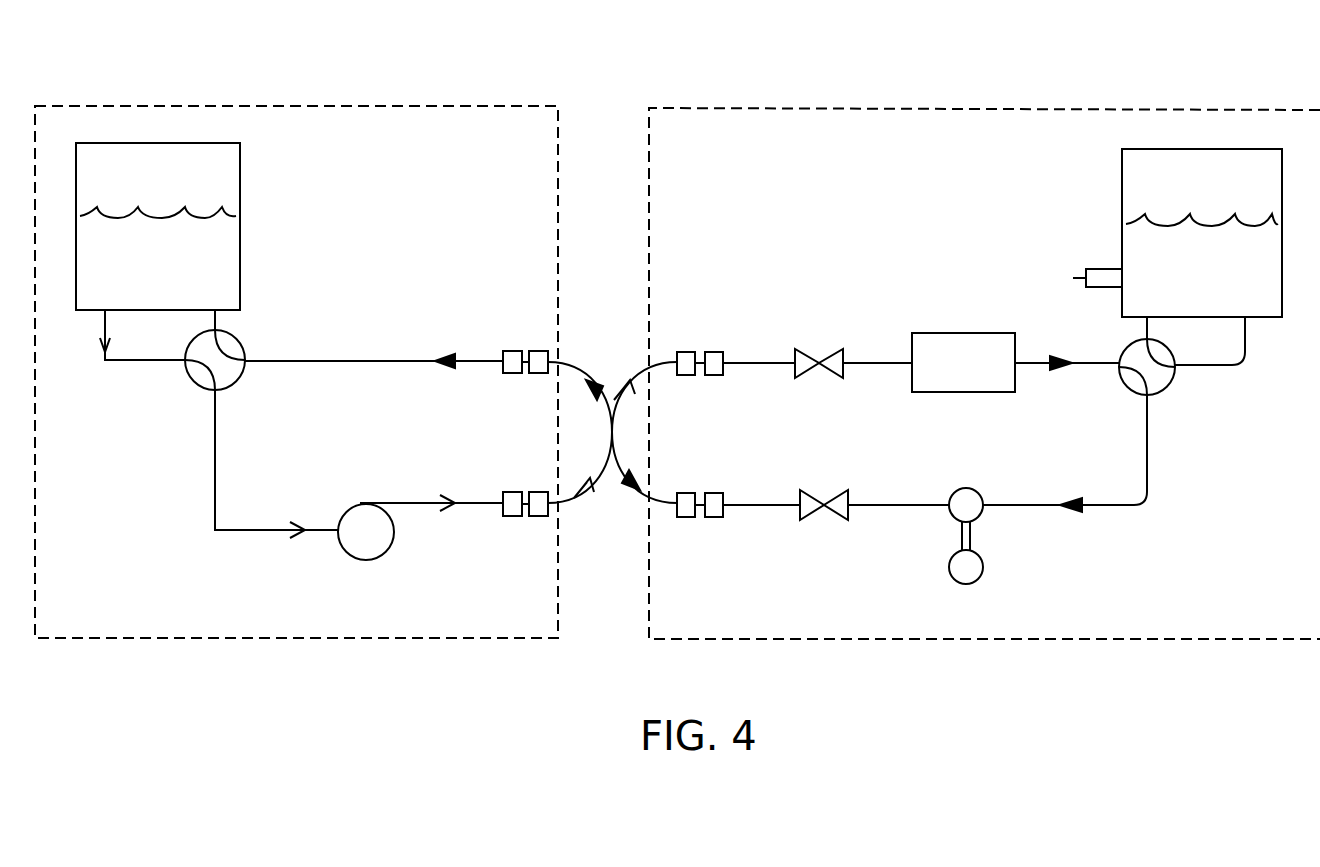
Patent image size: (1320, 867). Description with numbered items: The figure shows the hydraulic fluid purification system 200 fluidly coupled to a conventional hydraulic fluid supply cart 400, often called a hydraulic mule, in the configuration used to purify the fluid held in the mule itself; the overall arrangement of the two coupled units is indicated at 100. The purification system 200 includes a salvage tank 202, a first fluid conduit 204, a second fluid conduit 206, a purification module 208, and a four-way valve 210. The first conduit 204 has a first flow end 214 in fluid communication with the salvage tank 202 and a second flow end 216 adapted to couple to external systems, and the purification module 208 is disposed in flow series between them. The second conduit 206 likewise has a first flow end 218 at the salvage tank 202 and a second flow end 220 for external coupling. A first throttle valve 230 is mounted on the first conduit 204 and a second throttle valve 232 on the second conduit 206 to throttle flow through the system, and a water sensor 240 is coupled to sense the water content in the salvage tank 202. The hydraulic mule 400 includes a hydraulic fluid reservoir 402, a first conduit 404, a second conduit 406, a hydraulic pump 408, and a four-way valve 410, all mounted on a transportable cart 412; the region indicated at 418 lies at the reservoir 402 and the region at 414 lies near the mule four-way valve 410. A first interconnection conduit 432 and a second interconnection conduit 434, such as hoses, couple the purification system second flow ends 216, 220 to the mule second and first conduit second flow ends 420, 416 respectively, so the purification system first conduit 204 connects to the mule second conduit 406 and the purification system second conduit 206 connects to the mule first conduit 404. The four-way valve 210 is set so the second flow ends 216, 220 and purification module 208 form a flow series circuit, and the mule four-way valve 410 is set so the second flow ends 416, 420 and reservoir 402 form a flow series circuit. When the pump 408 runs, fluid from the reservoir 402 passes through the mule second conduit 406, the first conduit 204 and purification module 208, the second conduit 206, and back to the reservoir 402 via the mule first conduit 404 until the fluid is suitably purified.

The fluid handling system 100 is at (699, 108).
The hydraulic fluid purification system 200 is at (896, 152).
The salvage tank 202 is at (1122, 182).
The first fluid conduit 204 is at (885, 362).
The second fluid conduit 206 is at (886, 505).
The purification module 208 is at (945, 333).
The four-way valve 210 is at (1172, 390).
The first flow end 214 is at (1140, 332).
The second flow end 216 is at (712, 350).
The first flow end 218 is at (1247, 322).
The second flow end 220 is at (722, 520).
The first throttle valve 230 is at (820, 348).
The second throttle valve 232 is at (822, 510).
The water sensor 240 is at (1100, 268).
The hydraulic fluid supply cart 400 is at (384, 150).
The hydraulic fluid reservoir 402 is at (242, 188).
The first conduit 404 is at (402, 358).
The second conduit 406 is at (248, 530).
The hydraulic pump 408 is at (360, 504).
The four-way valve 410 is at (192, 378).
The transportable cart 412 is at (173, 106).
The tank outlet conduit 414 is at (222, 315).
The second flow end 416 is at (510, 350).
The tank inlet conduit 418 is at (100, 312).
The second flow end 420 is at (517, 517).
The first interconnection conduit 432 is at (600, 365).
The second interconnection conduit 434 is at (575, 504).